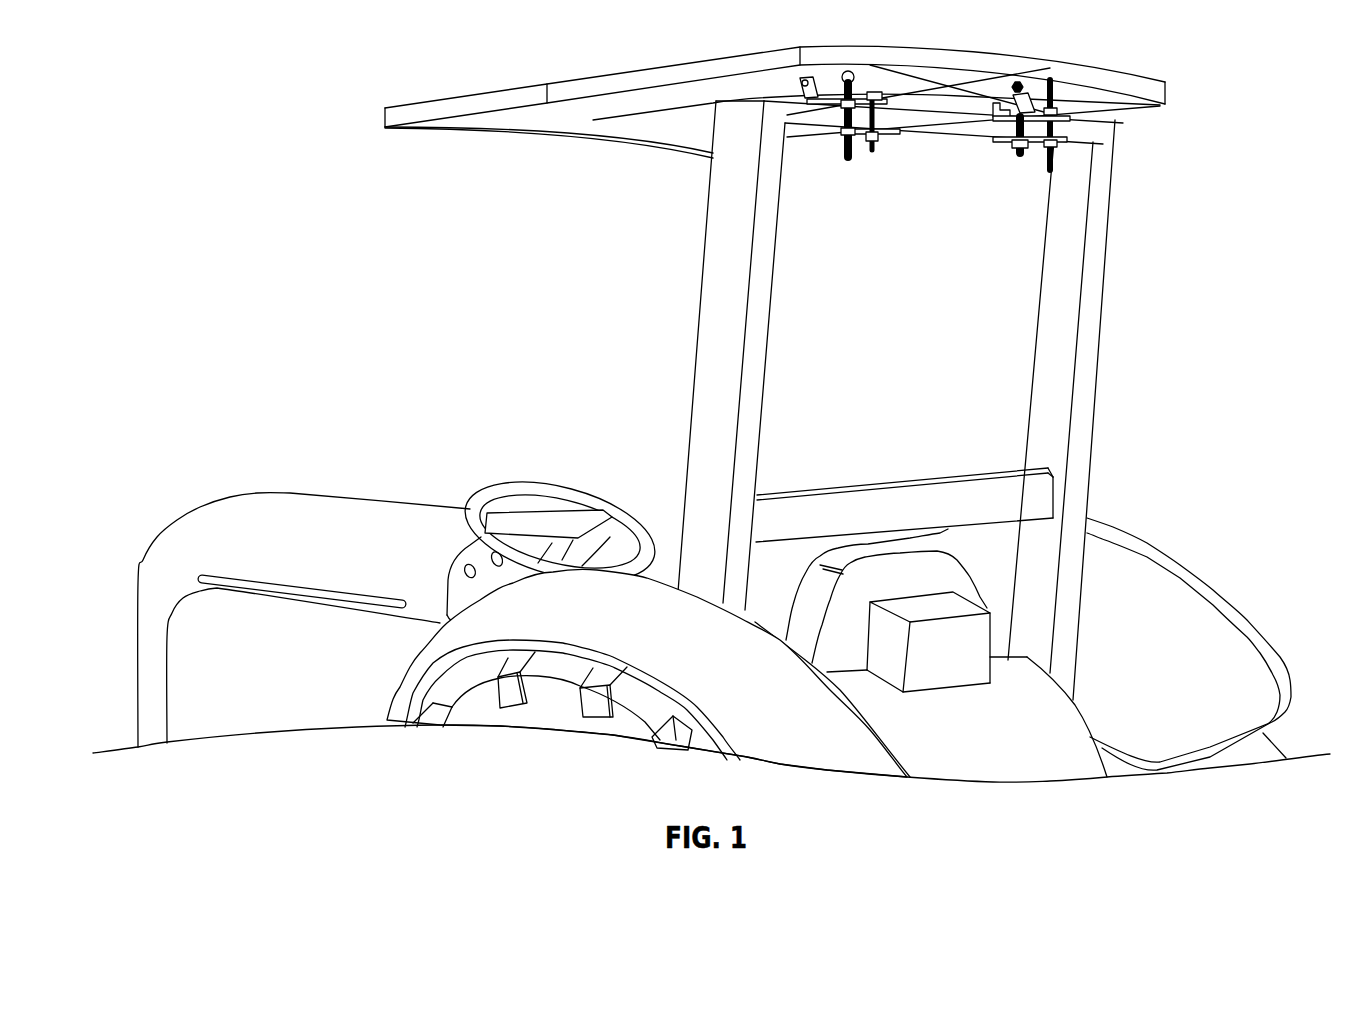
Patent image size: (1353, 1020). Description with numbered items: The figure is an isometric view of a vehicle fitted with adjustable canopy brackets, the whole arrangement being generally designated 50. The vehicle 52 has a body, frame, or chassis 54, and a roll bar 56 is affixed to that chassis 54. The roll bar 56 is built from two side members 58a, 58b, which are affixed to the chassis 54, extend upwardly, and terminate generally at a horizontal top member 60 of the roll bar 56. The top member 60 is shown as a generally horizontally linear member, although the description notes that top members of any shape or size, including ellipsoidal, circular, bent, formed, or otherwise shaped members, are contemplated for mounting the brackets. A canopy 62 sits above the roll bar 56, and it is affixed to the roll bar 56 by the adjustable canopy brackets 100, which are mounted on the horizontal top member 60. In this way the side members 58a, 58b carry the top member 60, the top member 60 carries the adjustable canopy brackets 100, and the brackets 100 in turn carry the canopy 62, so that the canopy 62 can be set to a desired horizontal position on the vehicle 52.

The vehicle including adjustable canopy brackets 50 is at (238, 110).
The vehicle 52 is at (203, 675).
The chassis 54 is at (1082, 717).
The roll bar 56 is at (1152, 276).
The side member 58a is at (751, 376).
The side member 58b is at (1094, 405).
The horizontal top member 60 is at (812, 116).
The canopy 62 is at (597, 77).
The adjustable canopy brackets 100 is at (1015, 190).